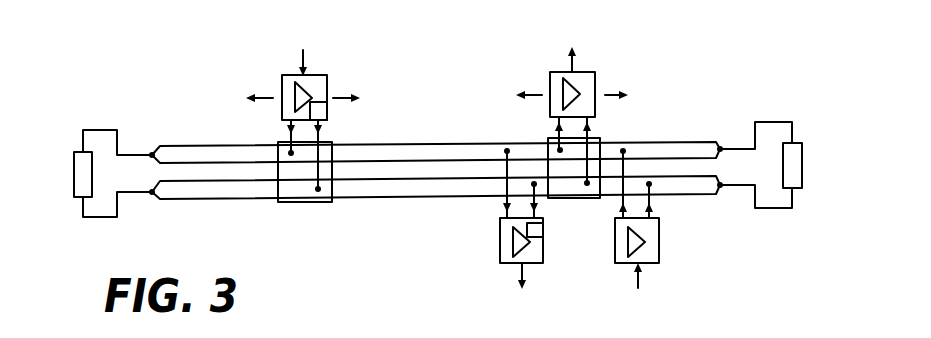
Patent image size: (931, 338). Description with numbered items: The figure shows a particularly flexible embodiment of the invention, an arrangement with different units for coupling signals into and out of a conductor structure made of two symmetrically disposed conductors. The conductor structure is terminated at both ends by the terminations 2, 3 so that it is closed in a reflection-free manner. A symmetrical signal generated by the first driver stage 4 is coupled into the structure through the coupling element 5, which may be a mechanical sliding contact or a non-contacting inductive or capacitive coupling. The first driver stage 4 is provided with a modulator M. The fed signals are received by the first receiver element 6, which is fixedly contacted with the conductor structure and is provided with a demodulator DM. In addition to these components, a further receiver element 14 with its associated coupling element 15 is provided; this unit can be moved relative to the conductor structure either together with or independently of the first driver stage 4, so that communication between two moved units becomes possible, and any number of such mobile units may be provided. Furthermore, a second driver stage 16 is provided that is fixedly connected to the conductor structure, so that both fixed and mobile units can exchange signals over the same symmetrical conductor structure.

The termination 2 is at (79, 167).
The termination 3 is at (803, 166).
The driver stage 4 is at (320, 87).
The coupling element 5 is at (295, 202).
The receiver element 6 is at (500, 250).
The receiver element 14 is at (590, 83).
The coupling element 15 is at (573, 198).
The second driver stage 16 is at (661, 247).
The modulator M is at (328, 107).
The demodulator DM is at (538, 228).